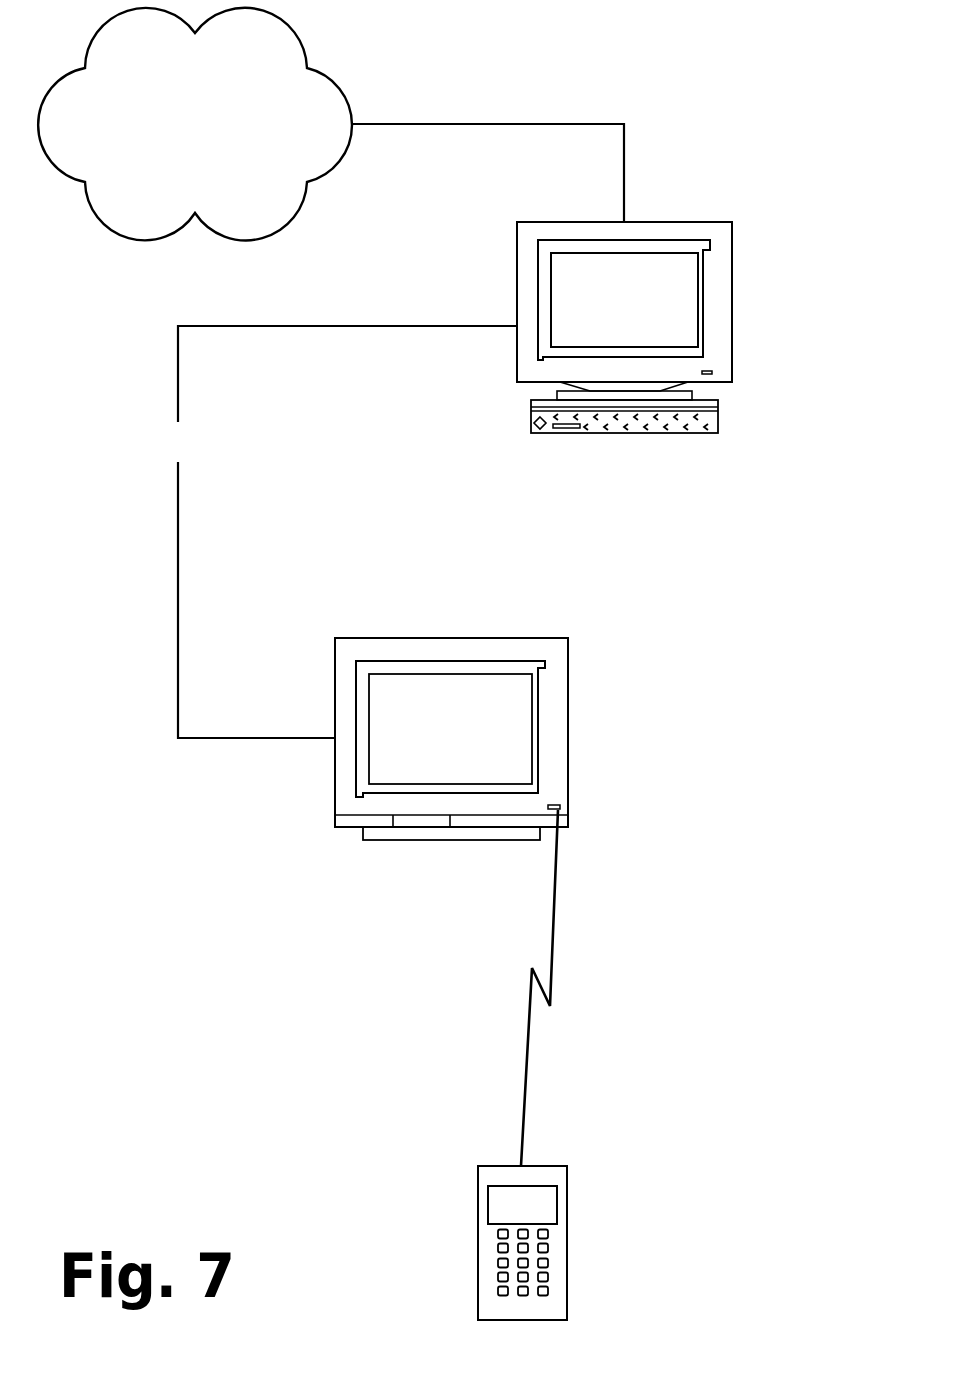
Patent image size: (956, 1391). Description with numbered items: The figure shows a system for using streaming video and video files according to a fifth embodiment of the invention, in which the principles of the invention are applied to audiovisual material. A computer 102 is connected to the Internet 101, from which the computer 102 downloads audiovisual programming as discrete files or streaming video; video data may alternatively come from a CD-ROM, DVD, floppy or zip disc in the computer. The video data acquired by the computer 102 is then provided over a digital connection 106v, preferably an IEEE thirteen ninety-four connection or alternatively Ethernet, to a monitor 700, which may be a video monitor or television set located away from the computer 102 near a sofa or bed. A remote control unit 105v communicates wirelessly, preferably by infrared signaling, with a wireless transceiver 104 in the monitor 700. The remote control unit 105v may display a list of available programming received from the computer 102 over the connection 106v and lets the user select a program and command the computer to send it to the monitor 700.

The Internet 101 is at (195, 124).
The computer 102 is at (624, 342).
The digital connection 106v is at (334, 532).
The monitor 700 is at (451, 755).
The wireless transceiver 104 is at (562, 805).
The remote control unit 105v is at (497, 1175).